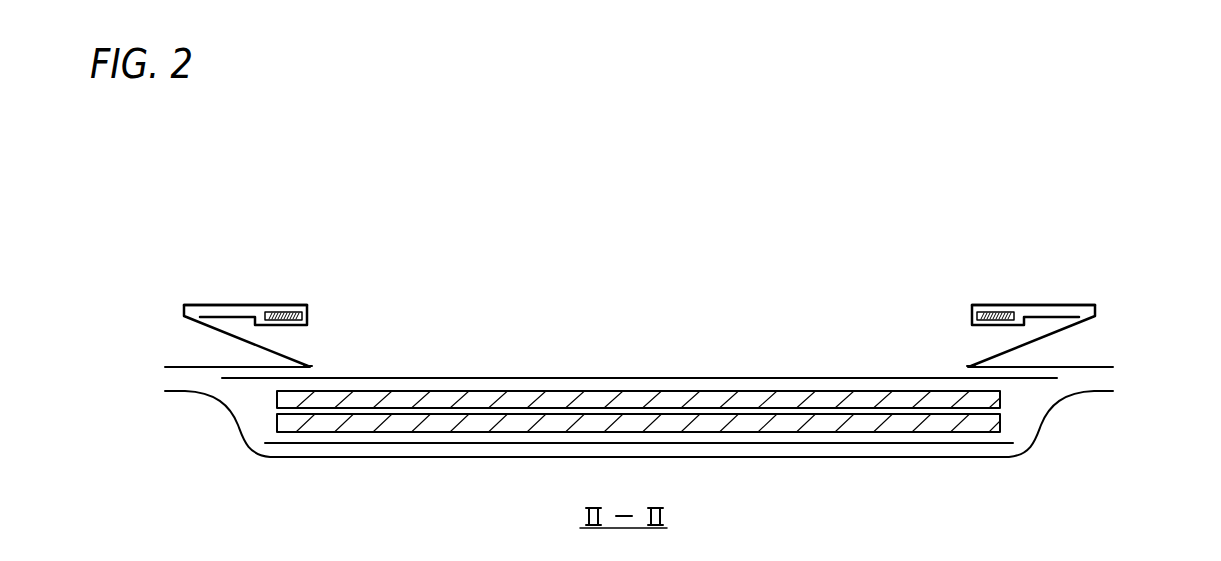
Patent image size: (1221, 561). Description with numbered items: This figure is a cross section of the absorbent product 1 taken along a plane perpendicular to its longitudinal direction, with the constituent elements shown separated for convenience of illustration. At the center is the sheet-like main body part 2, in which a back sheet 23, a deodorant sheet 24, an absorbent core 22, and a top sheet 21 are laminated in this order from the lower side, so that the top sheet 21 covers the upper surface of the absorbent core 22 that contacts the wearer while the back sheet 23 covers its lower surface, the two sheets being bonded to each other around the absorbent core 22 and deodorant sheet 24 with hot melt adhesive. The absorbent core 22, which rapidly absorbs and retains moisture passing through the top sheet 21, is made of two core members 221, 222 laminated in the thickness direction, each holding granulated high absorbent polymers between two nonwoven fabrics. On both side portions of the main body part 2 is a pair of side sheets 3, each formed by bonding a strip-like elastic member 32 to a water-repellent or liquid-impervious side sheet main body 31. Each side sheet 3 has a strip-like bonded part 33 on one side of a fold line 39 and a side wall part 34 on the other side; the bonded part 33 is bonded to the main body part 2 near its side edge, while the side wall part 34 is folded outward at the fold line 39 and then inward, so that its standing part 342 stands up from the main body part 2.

The absorbent product 1 is at (150, 190).
The main body part 2 is at (639, 323).
The side sheet 3 is at (639, 370).
The top sheet 21 is at (545, 378).
The absorbent core 22 is at (638, 326).
The core member 221 is at (562, 400).
The core member 222 is at (598, 422).
The back sheet 23 is at (628, 458).
The deodorant sheet 24 is at (675, 443).
The side sheet main body 31 is at (187, 369).
The elastic member 32 is at (282, 312).
The bonded part 33 is at (207, 367).
The side wall part 34 is at (641, 307).
The fold line 39 is at (314, 366).
The standing part 342 is at (215, 304).